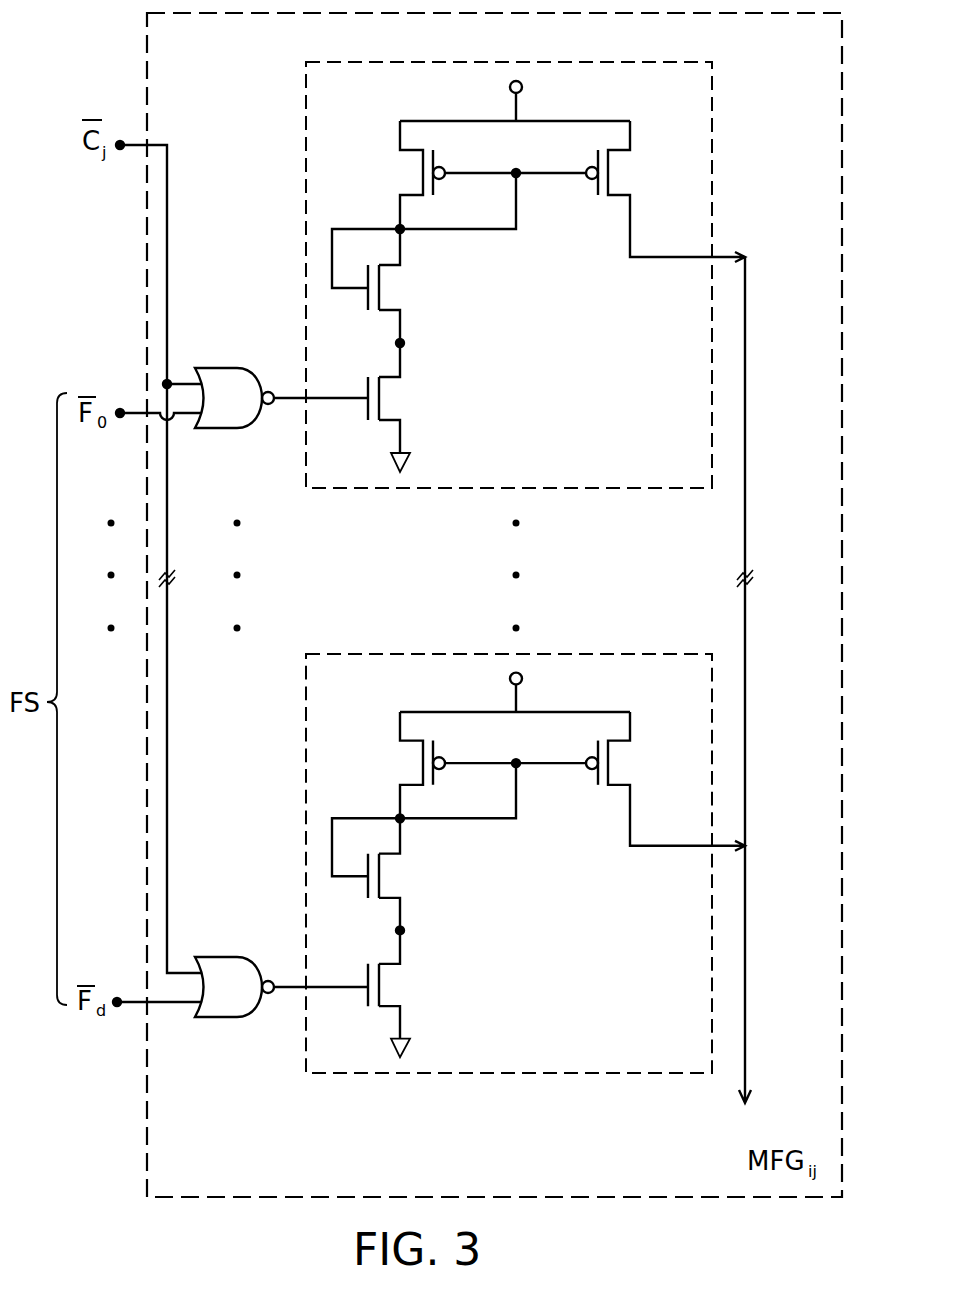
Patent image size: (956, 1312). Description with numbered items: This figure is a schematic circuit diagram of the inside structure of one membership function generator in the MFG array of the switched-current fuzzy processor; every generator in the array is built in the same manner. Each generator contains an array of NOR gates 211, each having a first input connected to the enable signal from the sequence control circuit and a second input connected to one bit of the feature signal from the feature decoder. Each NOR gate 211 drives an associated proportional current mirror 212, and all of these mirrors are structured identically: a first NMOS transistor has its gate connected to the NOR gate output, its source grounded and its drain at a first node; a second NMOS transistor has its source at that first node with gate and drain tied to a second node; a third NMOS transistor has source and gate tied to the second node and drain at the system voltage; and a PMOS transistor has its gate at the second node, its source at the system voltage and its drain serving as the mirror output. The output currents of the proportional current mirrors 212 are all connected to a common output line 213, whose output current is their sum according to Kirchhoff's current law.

The NOR gate 211 is at (222, 368).
The proportional current mirror 212 is at (673, 60).
The common output line 213 is at (746, 408).